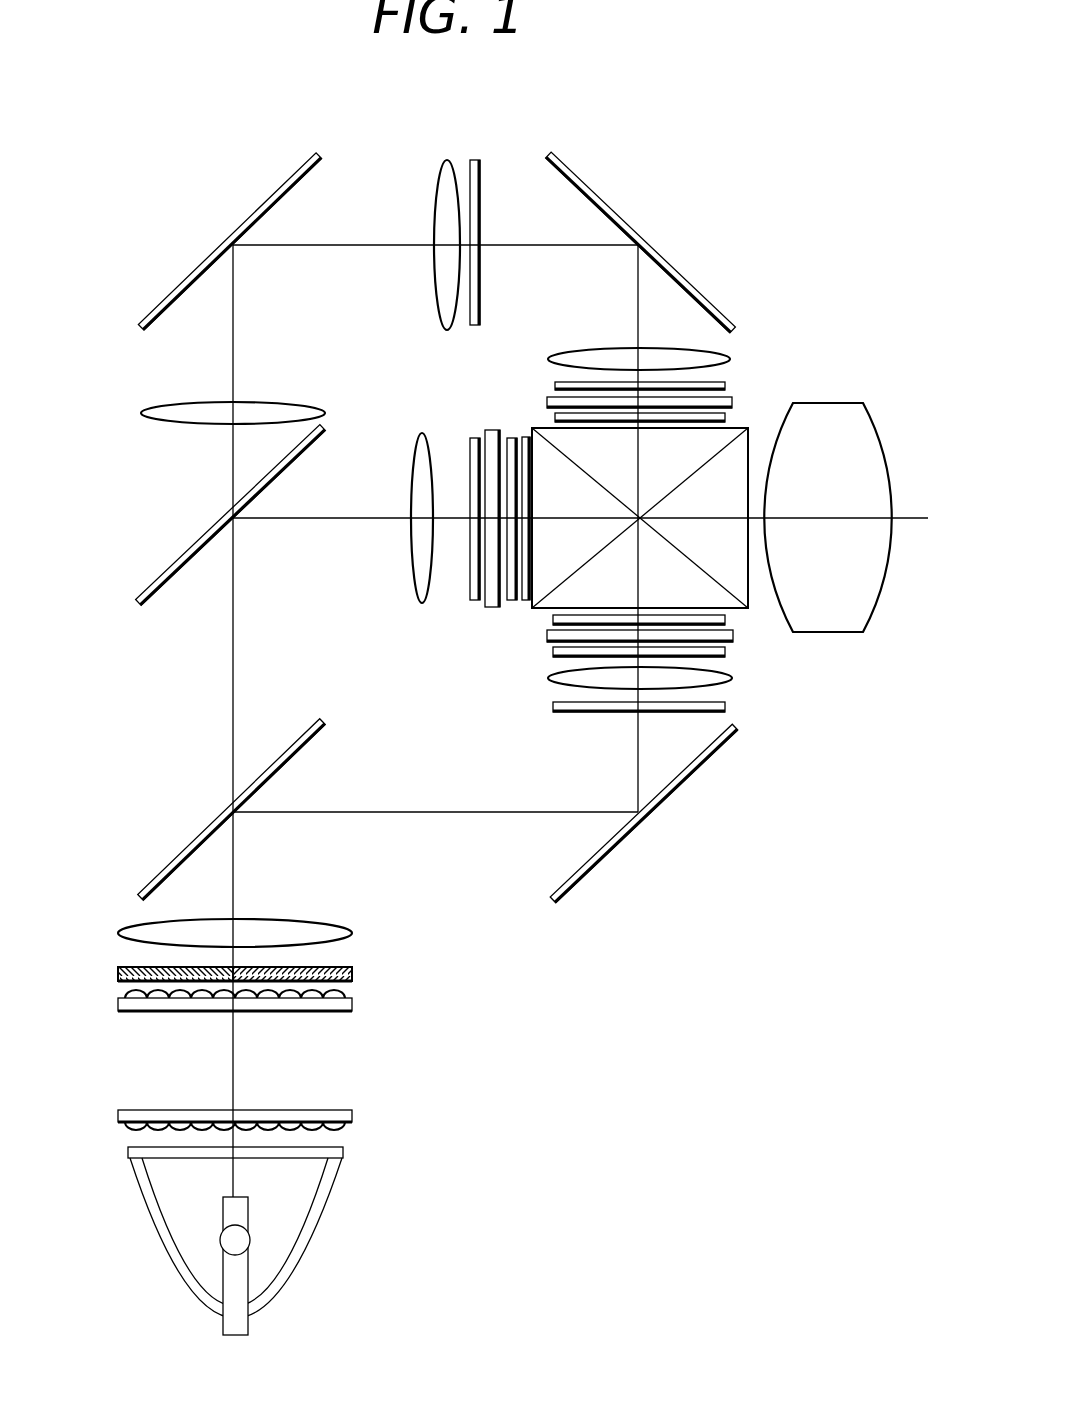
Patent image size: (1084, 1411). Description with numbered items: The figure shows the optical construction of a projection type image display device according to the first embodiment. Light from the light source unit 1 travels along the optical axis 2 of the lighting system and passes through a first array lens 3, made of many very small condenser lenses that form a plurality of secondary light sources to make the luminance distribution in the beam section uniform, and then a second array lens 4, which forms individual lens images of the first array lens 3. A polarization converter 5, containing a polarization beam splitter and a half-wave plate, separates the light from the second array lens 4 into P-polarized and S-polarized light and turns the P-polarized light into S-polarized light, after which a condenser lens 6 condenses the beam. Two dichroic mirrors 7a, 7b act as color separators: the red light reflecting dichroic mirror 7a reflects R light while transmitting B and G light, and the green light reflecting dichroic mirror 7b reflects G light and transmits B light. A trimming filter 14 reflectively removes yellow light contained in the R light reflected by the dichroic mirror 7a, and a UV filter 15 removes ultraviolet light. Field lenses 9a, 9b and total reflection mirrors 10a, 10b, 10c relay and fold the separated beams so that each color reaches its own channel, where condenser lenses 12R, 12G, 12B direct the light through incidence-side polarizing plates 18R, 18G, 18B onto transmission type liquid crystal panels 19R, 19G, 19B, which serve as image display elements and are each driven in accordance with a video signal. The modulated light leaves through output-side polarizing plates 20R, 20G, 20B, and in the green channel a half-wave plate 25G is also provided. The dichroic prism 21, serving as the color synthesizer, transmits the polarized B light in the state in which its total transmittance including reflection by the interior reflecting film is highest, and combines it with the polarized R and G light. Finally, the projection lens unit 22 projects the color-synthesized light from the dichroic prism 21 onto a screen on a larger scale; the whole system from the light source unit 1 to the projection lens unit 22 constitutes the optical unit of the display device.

The light source unit 1 is at (343, 1213).
The optical axis 2 is at (235, 1058).
The first array lens 3 is at (352, 1115).
The second array lens 4 is at (352, 1005).
The polarization converter 5 is at (352, 974).
The condenser lens 6 is at (352, 933).
The dichroic mirror 7a is at (162, 864).
The dichroic mirror 7b is at (162, 572).
The field lens 9a is at (142, 413).
The field lens 9b is at (437, 172).
The total reflection mirror 10a is at (583, 880).
The total reflection mirror 10b is at (312, 158).
The total reflection mirror 10c is at (570, 165).
The condenser lens 12B is at (582, 350).
The condenser lens 12G is at (412, 580).
The condenser lens 12R is at (733, 683).
The trimming filter 14 is at (584, 713).
The UV filter 15 is at (475, 160).
The incidence-side polarizing plate 18B is at (555, 386).
The incidence-side polarizing plate 18G is at (472, 601).
The incidence-side polarizing plate 18R is at (727, 653).
The transmission type liquid crystal panel 19B is at (548, 403).
The transmission type liquid crystal panel 19G is at (493, 609).
The transmission type liquid crystal panel 19R is at (733, 638).
The output-side polarizing plate 20B is at (555, 420).
The output-side polarizing plate 20G is at (511, 602).
The output-side polarizing plate 20R is at (727, 619).
The dichroic prism 21 is at (737, 426).
The projection lens unit 22 is at (832, 402).
The half-wave plate 25G is at (529, 602).